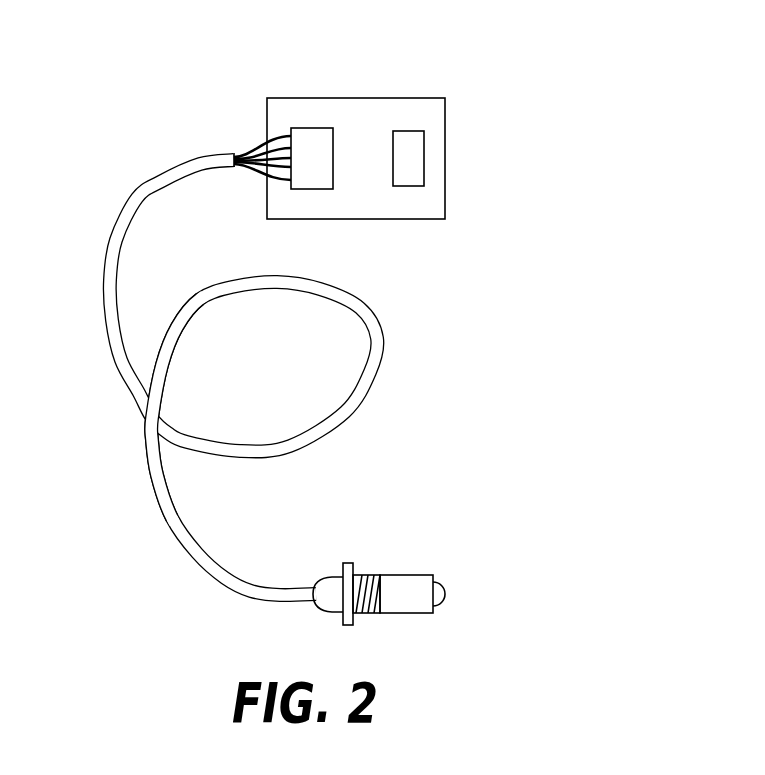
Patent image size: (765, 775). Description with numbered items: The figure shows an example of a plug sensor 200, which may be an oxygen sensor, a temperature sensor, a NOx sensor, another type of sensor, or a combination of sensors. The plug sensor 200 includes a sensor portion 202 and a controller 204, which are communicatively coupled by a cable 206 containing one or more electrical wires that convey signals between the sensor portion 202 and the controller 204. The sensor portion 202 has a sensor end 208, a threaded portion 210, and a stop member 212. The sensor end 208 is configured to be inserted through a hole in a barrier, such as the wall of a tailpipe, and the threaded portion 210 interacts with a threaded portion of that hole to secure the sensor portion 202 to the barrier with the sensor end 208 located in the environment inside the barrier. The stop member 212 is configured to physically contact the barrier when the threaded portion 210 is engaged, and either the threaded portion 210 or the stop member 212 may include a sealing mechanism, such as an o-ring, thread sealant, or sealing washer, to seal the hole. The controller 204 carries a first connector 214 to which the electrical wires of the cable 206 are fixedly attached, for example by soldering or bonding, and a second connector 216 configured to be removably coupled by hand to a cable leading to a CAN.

The plug sensor 200 is at (556, 158).
The sensor portion 202 is at (425, 525).
The controller 204 is at (258, 107).
The cable 206 is at (108, 295).
The sensor end 208 is at (420, 577).
The threaded portion 210 is at (370, 575).
The stop member 212 is at (345, 565).
The first connector 214 is at (316, 130).
The second connector 216 is at (412, 133).